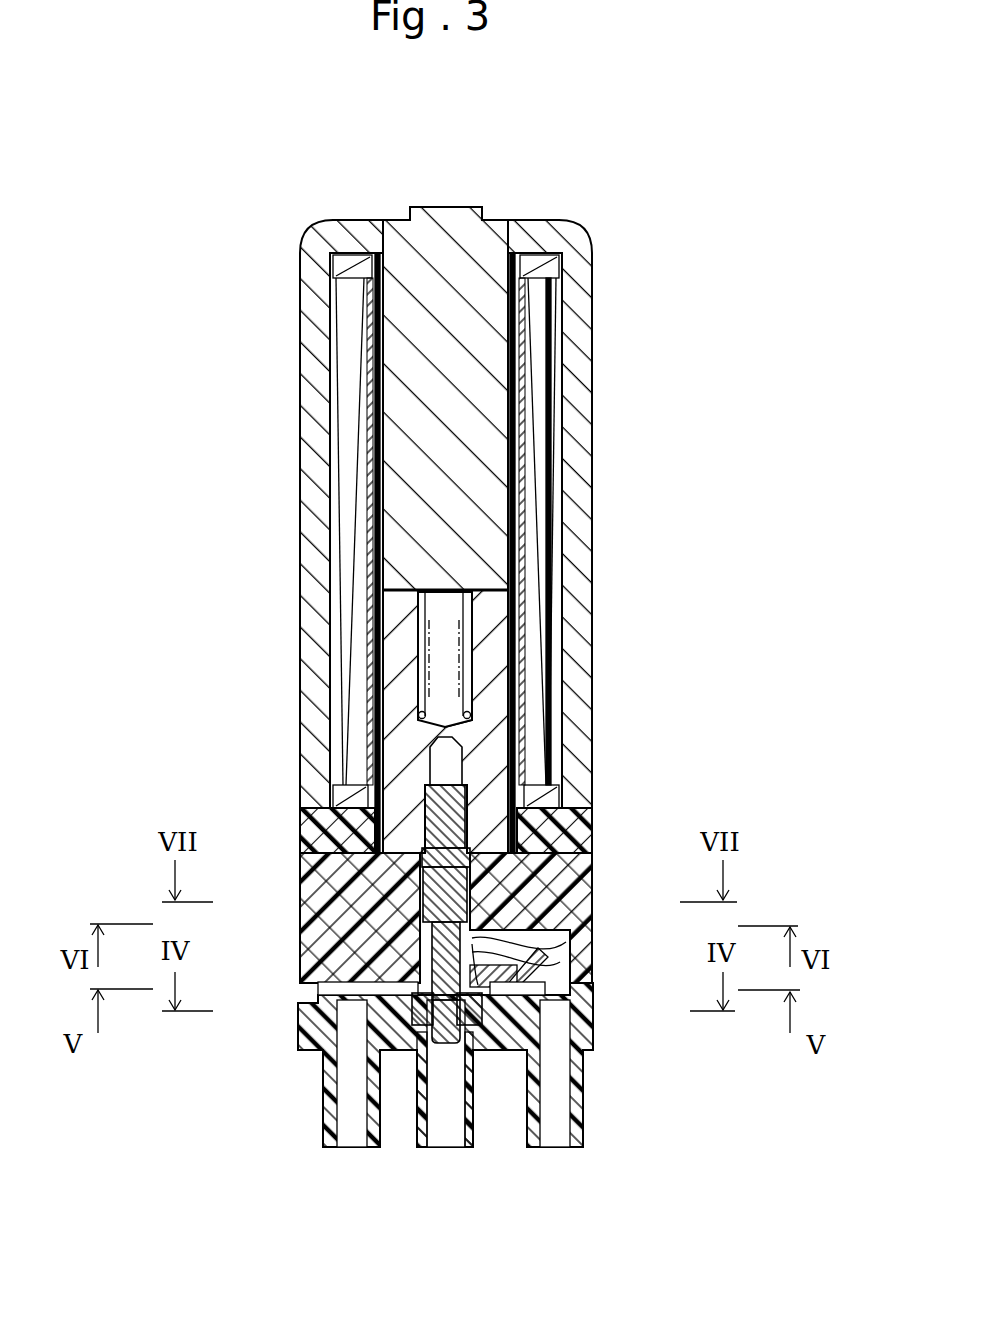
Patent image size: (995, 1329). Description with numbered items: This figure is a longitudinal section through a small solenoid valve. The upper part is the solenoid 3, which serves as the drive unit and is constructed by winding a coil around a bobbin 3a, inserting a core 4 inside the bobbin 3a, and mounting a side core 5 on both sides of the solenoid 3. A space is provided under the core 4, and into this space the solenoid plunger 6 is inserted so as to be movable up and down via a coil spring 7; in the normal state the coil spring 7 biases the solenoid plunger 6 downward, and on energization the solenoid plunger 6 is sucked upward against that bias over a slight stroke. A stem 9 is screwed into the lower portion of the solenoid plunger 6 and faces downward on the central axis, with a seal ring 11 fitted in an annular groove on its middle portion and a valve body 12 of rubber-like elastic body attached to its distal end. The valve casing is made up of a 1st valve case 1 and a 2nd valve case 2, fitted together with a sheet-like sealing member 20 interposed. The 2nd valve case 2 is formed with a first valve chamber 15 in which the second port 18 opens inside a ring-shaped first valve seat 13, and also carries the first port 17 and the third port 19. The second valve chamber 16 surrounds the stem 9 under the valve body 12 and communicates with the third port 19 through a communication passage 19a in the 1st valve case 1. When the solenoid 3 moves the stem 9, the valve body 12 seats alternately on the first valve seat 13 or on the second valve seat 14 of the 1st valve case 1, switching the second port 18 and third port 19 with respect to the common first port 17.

The 1st valve case 1 is at (540, 870).
The 2nd valve case 2 is at (312, 1023).
The solenoid 3 is at (553, 420).
The bobbin 3a is at (520, 490).
The core 4 is at (470, 355).
The side core 5 is at (580, 545).
The solenoid plunger 6 is at (495, 748).
The coil spring 7 is at (467, 663).
The stem 9 is at (450, 860).
The seal ring 11 is at (420, 880).
The valve body 12 is at (500, 1022).
The first valve seat 13 is at (415, 1052).
The second valve seat 14 is at (420, 985).
The first valve chamber 15 is at (403, 1023).
The second valve chamber 16 is at (420, 958).
The first port 17 is at (352, 1130).
The second port 18 is at (442, 1133).
The third port 19 is at (557, 1135).
The communication passage 19a is at (517, 930).
The sheet-like sealing member 20 is at (318, 995).